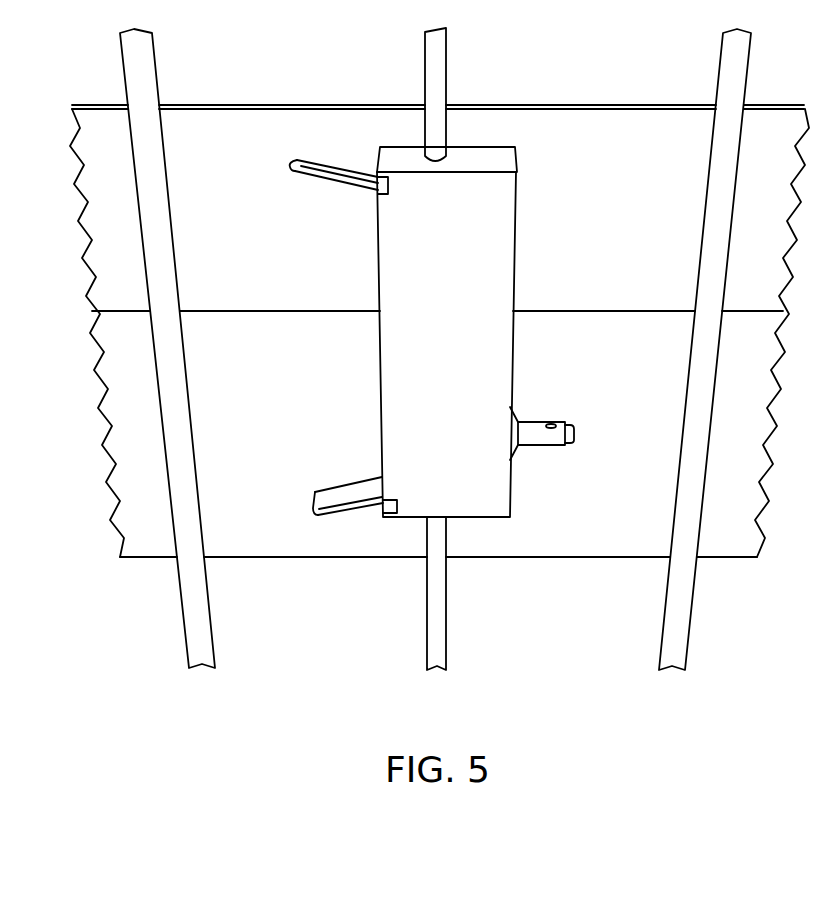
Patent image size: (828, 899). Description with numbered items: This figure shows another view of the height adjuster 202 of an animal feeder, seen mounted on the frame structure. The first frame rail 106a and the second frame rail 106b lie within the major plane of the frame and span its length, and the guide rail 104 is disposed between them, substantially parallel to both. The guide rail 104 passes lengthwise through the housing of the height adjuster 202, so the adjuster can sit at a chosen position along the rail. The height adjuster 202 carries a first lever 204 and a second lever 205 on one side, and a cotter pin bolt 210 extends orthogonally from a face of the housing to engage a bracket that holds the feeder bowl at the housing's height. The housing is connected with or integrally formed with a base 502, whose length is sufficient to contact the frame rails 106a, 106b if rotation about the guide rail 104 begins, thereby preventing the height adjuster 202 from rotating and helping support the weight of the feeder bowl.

The base 502 is at (609, 116).
The first frame rail 106a is at (190, 620).
The second frame rail 106b is at (666, 626).
The guide rail 104 is at (430, 625).
The height adjuster 202 is at (460, 301).
The first lever 204 is at (308, 163).
The second lever 205 is at (334, 493).
The cotter pin bolt 210 is at (536, 422).